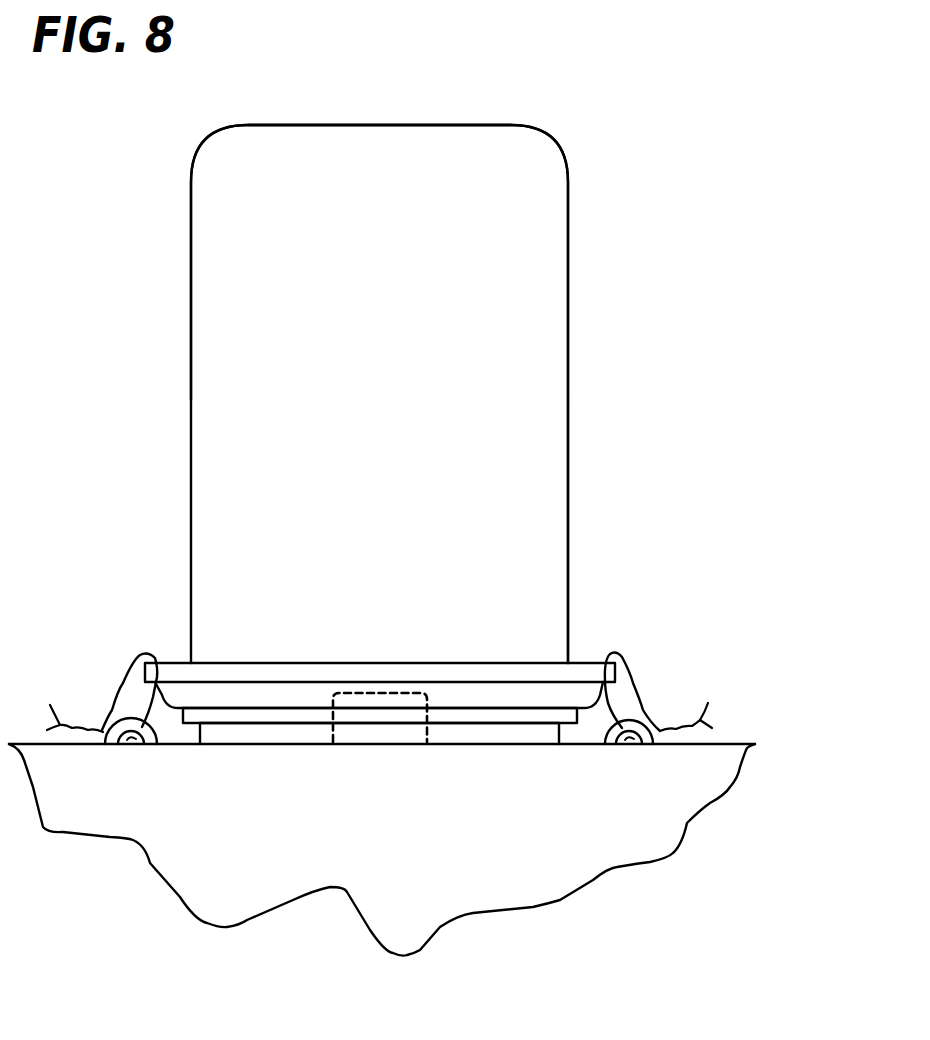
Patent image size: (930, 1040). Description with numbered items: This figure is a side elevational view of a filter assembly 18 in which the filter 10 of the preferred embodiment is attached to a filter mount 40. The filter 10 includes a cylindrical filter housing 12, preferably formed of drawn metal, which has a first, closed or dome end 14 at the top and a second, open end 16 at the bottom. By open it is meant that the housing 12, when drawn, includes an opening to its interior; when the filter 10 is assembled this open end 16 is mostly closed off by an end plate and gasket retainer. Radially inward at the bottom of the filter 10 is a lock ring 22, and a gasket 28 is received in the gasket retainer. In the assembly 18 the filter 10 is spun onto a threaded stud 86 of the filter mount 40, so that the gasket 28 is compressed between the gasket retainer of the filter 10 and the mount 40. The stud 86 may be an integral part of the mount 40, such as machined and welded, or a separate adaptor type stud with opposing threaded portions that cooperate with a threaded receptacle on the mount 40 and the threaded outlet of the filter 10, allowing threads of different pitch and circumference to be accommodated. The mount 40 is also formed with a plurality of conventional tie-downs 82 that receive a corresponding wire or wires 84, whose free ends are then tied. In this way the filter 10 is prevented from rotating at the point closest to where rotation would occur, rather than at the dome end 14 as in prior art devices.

The filter 10 is at (618, 367).
The filter housing 12 is at (557, 272).
The first closed or dome end 14 is at (470, 124).
The second open end 16 is at (260, 720).
The filter assembly 18 is at (734, 532).
The lock ring 22 is at (333, 672).
The gasket 28 is at (509, 732).
The filter mount 40 is at (667, 803).
The tie-downs 82 is at (108, 746).
The wire 84 is at (123, 672).
The threaded stud 86 is at (331, 735).